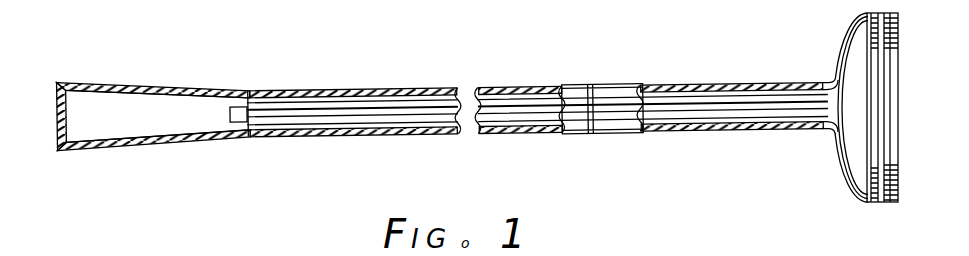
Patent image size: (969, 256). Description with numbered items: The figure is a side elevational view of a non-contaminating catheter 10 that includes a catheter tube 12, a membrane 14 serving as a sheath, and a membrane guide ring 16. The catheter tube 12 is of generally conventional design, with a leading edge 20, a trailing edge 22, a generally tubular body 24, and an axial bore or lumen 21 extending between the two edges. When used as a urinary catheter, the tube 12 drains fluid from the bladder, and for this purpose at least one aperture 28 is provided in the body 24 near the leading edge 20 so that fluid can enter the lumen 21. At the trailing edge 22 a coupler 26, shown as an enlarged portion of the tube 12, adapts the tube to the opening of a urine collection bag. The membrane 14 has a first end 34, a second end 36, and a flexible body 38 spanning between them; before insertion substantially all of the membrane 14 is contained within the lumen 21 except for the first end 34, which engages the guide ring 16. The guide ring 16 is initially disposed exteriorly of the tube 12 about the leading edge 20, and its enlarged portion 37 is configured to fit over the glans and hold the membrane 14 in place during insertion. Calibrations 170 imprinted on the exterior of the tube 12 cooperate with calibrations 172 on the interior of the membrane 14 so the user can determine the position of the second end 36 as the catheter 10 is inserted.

The non-contaminating catheter 10 is at (376, 158).
The catheter tube 12 is at (538, 129).
The membrane 14 is at (536, 105).
The membrane guide ring 16 is at (852, 200).
The leading edge 20 is at (826, 137).
The axial bore (lumen) 21 is at (172, 124).
The trailing edge 22 is at (70, 152).
The tubular body 24 is at (278, 142).
The coupler 26 is at (104, 98).
The aperture 28 is at (785, 134).
The first end 34 is at (840, 54).
The second end 36 is at (237, 127).
The enlarged portion 37 is at (888, 202).
The flexible body 38 is at (378, 108).
The calibrations 170 is at (598, 87).
The calibrations 172 is at (250, 87).